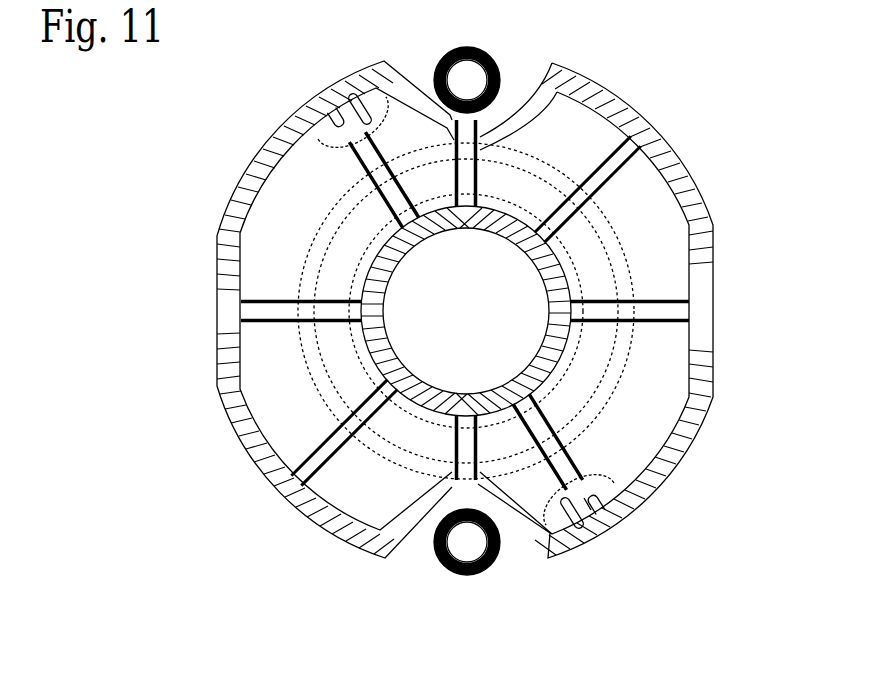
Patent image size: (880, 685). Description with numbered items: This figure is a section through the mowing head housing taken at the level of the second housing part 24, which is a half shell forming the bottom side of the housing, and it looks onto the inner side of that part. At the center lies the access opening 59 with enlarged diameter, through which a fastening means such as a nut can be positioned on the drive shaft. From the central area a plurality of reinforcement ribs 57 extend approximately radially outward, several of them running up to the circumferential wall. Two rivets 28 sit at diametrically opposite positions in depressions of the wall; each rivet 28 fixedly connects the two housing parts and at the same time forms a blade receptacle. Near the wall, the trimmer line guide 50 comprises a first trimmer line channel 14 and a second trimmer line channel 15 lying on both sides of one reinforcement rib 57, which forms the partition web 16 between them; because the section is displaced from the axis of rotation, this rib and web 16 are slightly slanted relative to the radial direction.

The first trimmer line channel 14 is at (572, 512).
The second trimmer line channel 15 is at (594, 506).
The partition web 16 is at (588, 508).
The second housing part 24 is at (673, 158).
The rivet 28 is at (492, 556).
The trimmer line guide 50 is at (332, 113).
The reinforcement ribs 57 is at (460, 470).
The access opening 59 is at (525, 277).